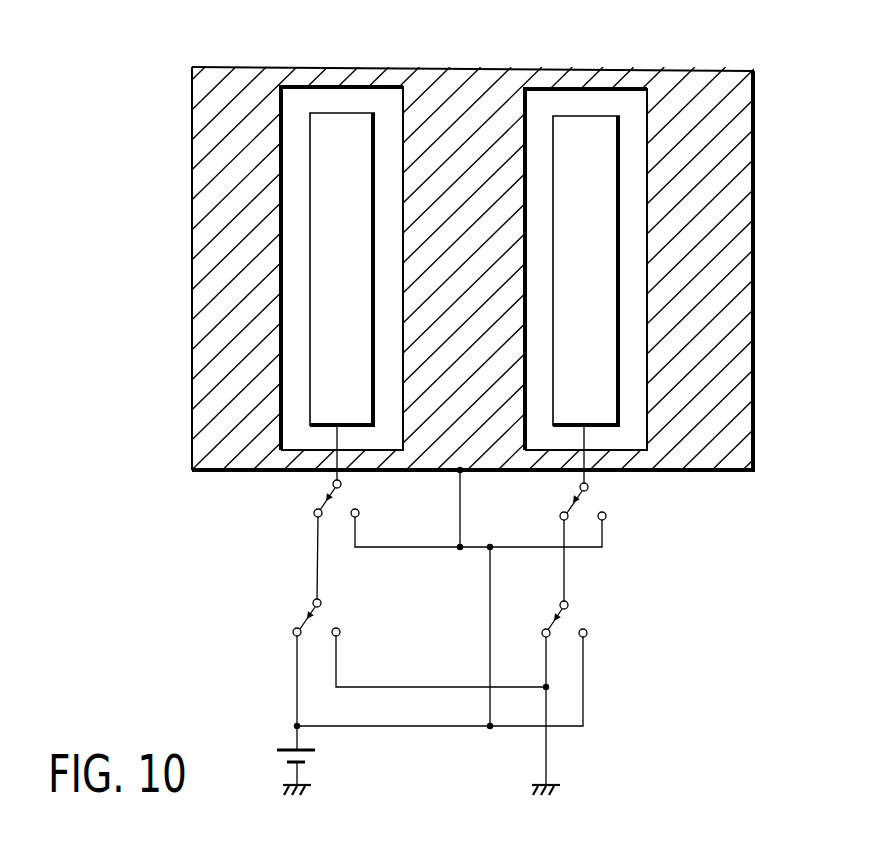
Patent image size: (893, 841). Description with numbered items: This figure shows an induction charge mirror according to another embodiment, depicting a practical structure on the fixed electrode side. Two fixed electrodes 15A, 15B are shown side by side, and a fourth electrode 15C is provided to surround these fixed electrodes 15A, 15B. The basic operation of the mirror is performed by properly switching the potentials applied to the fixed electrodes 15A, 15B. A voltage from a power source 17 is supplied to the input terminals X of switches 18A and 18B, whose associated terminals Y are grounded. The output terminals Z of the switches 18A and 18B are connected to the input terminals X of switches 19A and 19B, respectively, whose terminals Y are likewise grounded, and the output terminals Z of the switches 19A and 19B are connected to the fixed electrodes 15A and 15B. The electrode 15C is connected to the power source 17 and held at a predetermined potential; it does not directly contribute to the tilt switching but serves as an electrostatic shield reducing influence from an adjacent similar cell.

The fixed electrode 15A is at (343, 113).
The fixed electrode 15B is at (590, 113).
The fourth electrode 15C is at (683, 72).
The power source 17 is at (283, 737).
The switch 18A is at (298, 605).
The switch 18B is at (577, 615).
The switch 19A is at (317, 492).
The switch 19B is at (593, 495).